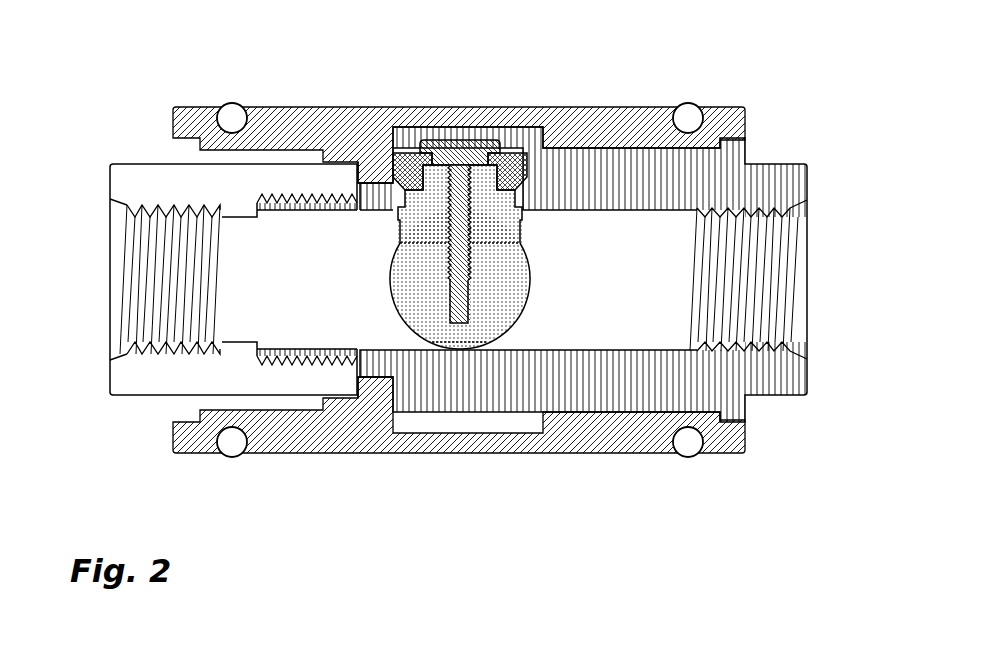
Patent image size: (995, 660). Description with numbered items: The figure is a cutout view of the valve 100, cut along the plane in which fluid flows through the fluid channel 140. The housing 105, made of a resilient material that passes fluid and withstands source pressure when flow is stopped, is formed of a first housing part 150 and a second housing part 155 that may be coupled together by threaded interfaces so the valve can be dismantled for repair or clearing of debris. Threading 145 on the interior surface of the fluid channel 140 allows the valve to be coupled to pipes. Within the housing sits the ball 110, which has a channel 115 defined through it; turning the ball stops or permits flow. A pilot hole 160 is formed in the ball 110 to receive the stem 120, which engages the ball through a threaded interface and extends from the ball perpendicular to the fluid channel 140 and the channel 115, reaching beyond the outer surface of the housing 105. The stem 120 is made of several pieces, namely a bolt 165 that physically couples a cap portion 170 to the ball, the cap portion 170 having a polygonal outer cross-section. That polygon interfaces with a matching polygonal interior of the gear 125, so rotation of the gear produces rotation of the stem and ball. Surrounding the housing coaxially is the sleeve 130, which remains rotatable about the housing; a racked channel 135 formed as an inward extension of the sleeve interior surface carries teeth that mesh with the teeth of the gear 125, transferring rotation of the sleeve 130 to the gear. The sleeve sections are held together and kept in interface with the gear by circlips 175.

The valve 100 is at (130, 91).
The housing 105 is at (110, 182).
The ball 110 is at (510, 289).
The channel 115 is at (376, 288).
The stem 120 is at (534, 223).
The gear 125 is at (407, 157).
The sleeve 130 is at (300, 113).
The racked channel 135 is at (382, 160).
The fluid channel 140 is at (100, 289).
The threading 145 is at (122, 218).
The first housing part 150 is at (100, 377).
The second housing part 155 is at (776, 412).
The pilot hole 160 is at (443, 292).
The bolt 165 is at (470, 252).
The cap portion 170 is at (487, 190).
The circlips 175 is at (231, 112).